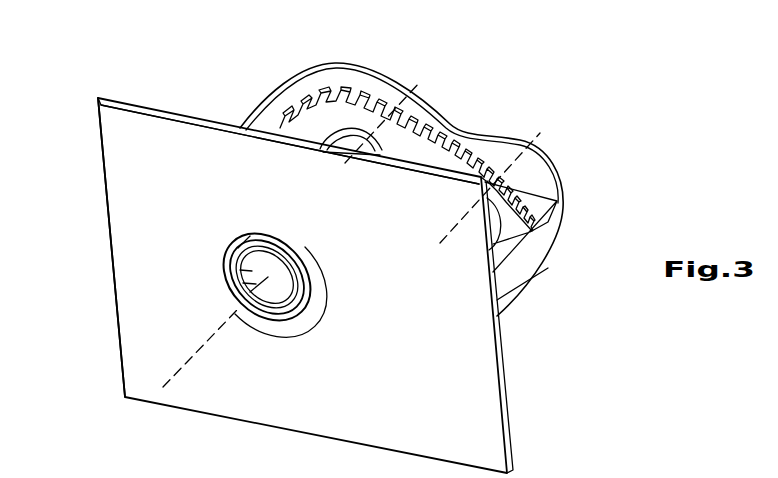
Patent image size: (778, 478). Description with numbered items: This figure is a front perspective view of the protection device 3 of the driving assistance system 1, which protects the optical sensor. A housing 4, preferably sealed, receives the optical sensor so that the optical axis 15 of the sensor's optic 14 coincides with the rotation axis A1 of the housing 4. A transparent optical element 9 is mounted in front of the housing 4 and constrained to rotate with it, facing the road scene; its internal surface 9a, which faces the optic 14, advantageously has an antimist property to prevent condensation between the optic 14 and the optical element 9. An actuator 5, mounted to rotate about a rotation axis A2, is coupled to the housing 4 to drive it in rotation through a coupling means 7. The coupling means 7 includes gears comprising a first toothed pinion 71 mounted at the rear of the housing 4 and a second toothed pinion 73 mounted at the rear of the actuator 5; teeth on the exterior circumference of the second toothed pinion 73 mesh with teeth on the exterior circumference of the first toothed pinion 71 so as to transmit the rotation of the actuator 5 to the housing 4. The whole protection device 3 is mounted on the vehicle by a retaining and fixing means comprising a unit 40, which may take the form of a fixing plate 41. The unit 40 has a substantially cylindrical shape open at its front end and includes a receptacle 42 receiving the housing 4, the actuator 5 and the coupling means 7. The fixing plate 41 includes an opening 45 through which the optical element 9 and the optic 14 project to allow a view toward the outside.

The driving assistance system 1 is at (79, 172).
The protection device 3 is at (463, 105).
The housing 4 is at (274, 130).
The actuator 5 is at (496, 252).
The coupling means 7 is at (543, 142).
The transparent optical element 9 is at (242, 288).
The internal surface of the optical element 9a is at (230, 288).
The optic 14 is at (232, 267).
The optical axis 15 is at (192, 357).
The unit 40 is at (493, 147).
The fixing plate 41 is at (472, 390).
The receptacle 42 is at (353, 95).
The opening 45 is at (270, 292).
The first toothed pinion 71 is at (328, 102).
The second toothed pinion 73 is at (560, 197).
The rotation axis of the housing A1 is at (417, 82).
The rotation axis of the actuator A2 is at (521, 175).